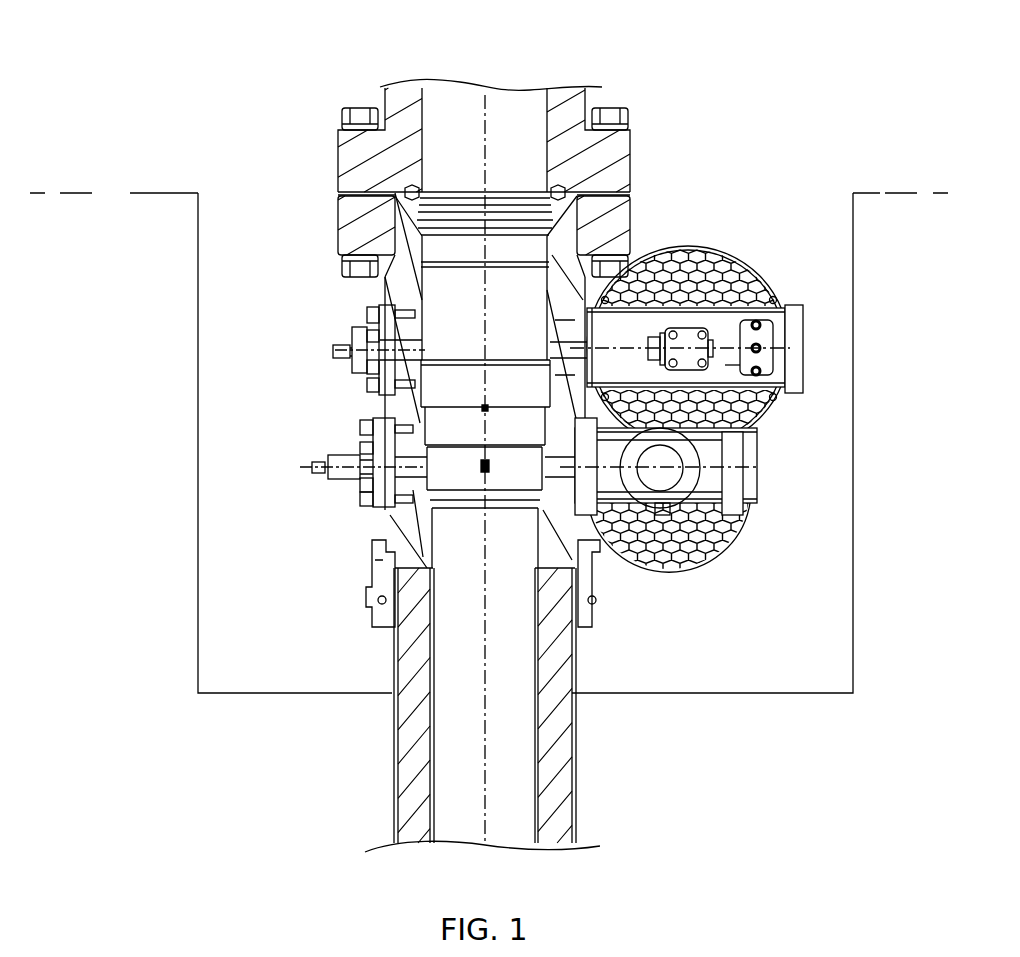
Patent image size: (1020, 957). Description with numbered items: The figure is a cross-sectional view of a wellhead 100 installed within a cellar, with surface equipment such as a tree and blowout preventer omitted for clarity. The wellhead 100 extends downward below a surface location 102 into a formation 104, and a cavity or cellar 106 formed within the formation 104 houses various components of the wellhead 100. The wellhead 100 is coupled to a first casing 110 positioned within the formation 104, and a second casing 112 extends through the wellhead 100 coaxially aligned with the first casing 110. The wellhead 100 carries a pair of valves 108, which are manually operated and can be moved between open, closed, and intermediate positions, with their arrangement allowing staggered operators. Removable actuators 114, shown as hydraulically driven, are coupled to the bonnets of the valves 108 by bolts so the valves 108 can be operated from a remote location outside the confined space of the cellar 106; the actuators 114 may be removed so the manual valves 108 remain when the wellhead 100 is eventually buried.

The wellhead 100 is at (280, 92).
The surface location 102 is at (150, 193).
The formation 104 is at (186, 488).
The cellar 106 is at (735, 650).
The valves 108 is at (333, 455).
The first casing 110 is at (560, 758).
The second casing 112 is at (455, 742).
The removable actuators 114 is at (787, 282).